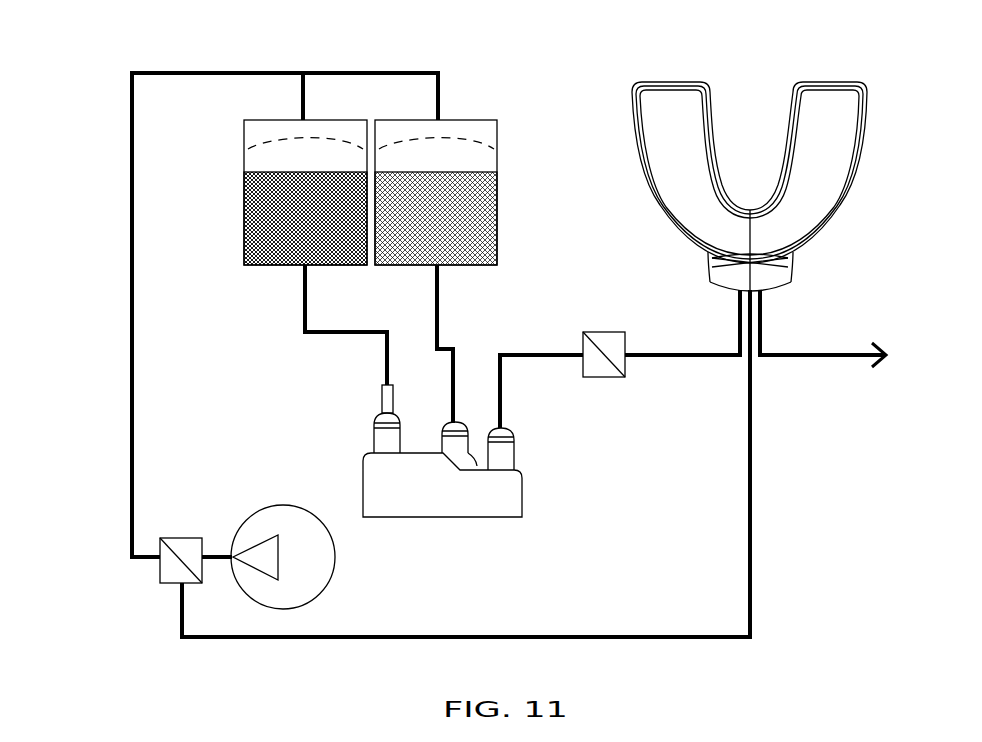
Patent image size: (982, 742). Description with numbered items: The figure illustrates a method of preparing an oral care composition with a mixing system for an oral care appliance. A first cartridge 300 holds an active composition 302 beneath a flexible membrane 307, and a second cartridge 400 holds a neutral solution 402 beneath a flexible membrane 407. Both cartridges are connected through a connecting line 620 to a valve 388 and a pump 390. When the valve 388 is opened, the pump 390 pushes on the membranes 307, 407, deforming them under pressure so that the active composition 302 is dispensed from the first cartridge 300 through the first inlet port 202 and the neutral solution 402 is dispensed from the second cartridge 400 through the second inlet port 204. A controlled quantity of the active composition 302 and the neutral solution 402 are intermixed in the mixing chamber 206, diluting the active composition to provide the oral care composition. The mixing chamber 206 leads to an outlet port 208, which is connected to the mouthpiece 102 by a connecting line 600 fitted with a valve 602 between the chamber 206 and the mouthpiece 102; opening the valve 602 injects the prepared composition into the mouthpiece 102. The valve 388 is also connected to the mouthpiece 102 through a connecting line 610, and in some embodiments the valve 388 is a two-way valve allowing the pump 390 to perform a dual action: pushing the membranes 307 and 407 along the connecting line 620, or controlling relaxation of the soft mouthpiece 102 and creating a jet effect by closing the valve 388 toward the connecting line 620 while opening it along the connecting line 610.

The mouthpiece 102 is at (688, 212).
The first inlet port 202 is at (381, 441).
The second inlet port 204 is at (453, 444).
The mixing chamber 206 is at (517, 506).
The outlet port 208 is at (500, 462).
The first cartridge 300 is at (244, 141).
The active composition 302 is at (266, 208).
The membrane 307 is at (320, 138).
The valve 388 is at (160, 574).
The pump 390 is at (326, 570).
The second cartridge 400 is at (497, 140).
The neutral solution 402 is at (472, 212).
The membrane 407 is at (470, 140).
The connecting line 600 is at (672, 358).
The valve 602 is at (606, 352).
The connecting line 610 is at (750, 535).
The connecting line 620 is at (132, 314).